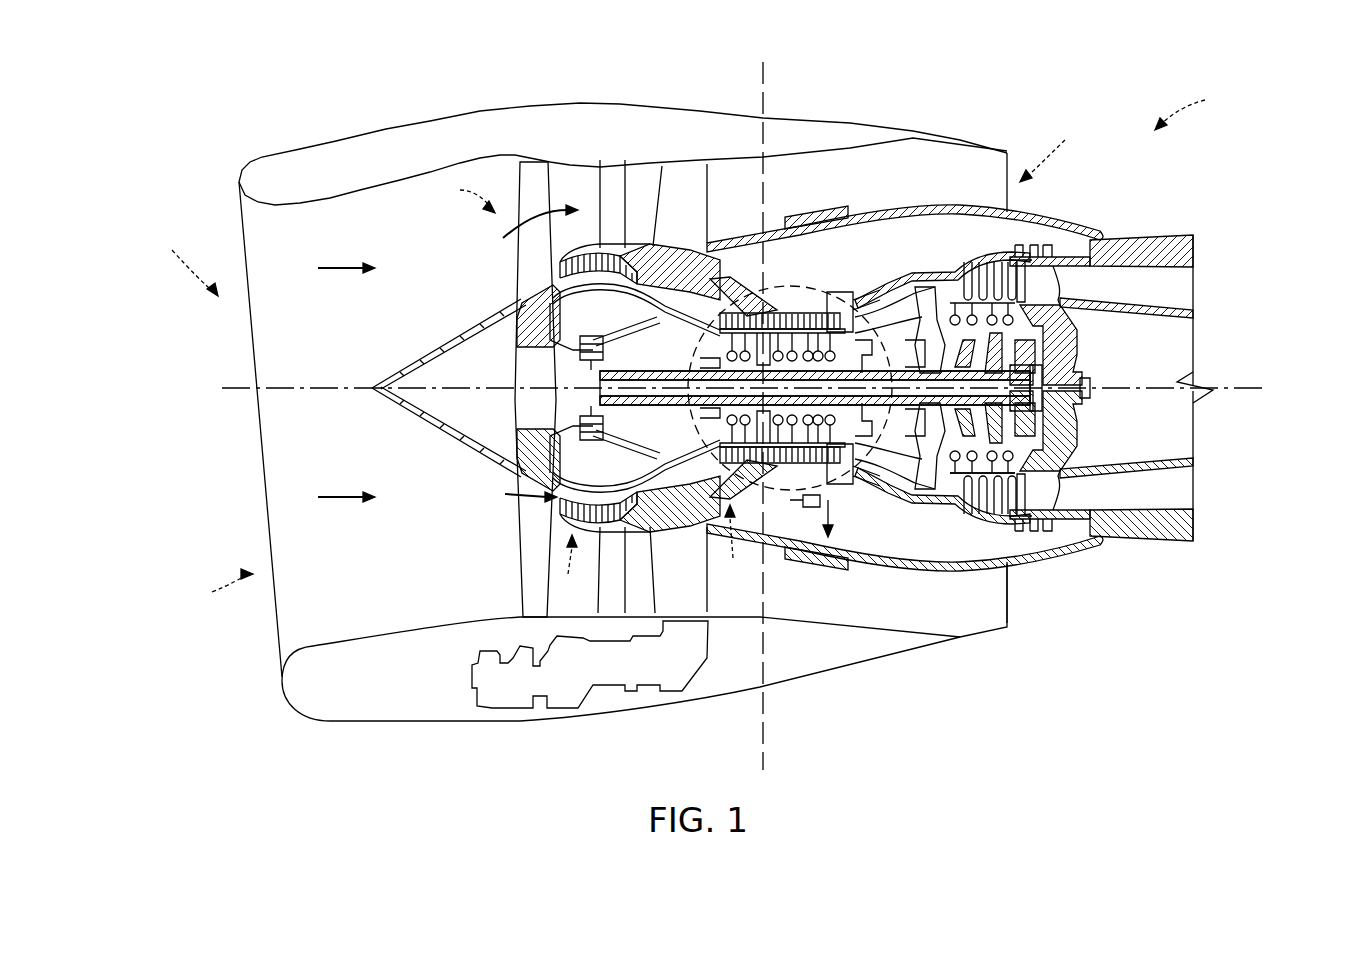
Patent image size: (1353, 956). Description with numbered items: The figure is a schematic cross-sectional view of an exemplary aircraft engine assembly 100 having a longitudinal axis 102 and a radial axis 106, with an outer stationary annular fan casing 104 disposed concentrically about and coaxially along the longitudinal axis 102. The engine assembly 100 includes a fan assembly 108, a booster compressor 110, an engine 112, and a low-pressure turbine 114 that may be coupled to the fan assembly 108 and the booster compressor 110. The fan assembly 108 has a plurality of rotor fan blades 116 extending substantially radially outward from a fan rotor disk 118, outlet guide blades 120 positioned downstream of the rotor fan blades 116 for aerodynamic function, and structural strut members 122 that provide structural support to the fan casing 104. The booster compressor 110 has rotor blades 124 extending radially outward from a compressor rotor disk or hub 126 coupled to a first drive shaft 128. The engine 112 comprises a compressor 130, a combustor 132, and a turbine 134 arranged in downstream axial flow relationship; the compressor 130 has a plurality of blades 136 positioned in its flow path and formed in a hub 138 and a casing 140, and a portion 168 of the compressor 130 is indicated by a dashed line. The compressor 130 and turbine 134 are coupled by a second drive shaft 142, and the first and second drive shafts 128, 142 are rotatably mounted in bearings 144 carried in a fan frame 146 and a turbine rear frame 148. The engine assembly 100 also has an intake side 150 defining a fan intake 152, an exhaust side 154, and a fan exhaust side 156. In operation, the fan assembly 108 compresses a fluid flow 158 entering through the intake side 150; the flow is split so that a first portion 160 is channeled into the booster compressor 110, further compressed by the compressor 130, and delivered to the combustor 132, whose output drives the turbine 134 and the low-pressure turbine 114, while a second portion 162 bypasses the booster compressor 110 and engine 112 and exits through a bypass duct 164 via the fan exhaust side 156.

The engine assembly 100 is at (1201, 107).
The longitudinal axis 102 is at (322, 380).
The outer stationary annular fan casing 104 is at (555, 101).
The radial axis 106 is at (766, 90).
The fan assembly 108 is at (456, 194).
The booster compressor 110 is at (568, 565).
The engine 112 is at (869, 288).
The low-pressure turbine 114 is at (1004, 538).
The rotor fan blades 116 is at (533, 170).
The fan rotor disk 118 is at (542, 437).
The outlet guide blades 120 is at (698, 178).
The structural strut members 122 is at (607, 175).
The rotor blades 124 is at (610, 500).
The compressor rotor disk or hub 126 is at (560, 322).
The first drive shaft 128 is at (576, 352).
The compressor 130 is at (790, 496).
The combustor 132 is at (885, 462).
The turbine 134 is at (930, 472).
The plurality of blades 136 is at (748, 515).
The hub 138 is at (807, 302).
The casing 140 is at (817, 510).
The second drive shaft 142 is at (1043, 410).
The bearings 144 is at (1078, 362).
The fan frame 146 is at (1066, 430).
The turbine rear frame 148 is at (1153, 235).
The intake side 150 is at (178, 259).
The fan intake 152 is at (211, 588).
The exhaust side 154 is at (1182, 290).
The fan exhaust side 156 is at (1054, 146).
The fluid flow 158 is at (340, 265).
The first portion 160 is at (530, 520).
The second portion 162 is at (508, 240).
The bypass duct 164 is at (868, 190).
The portion of the compressor 168 is at (815, 225).